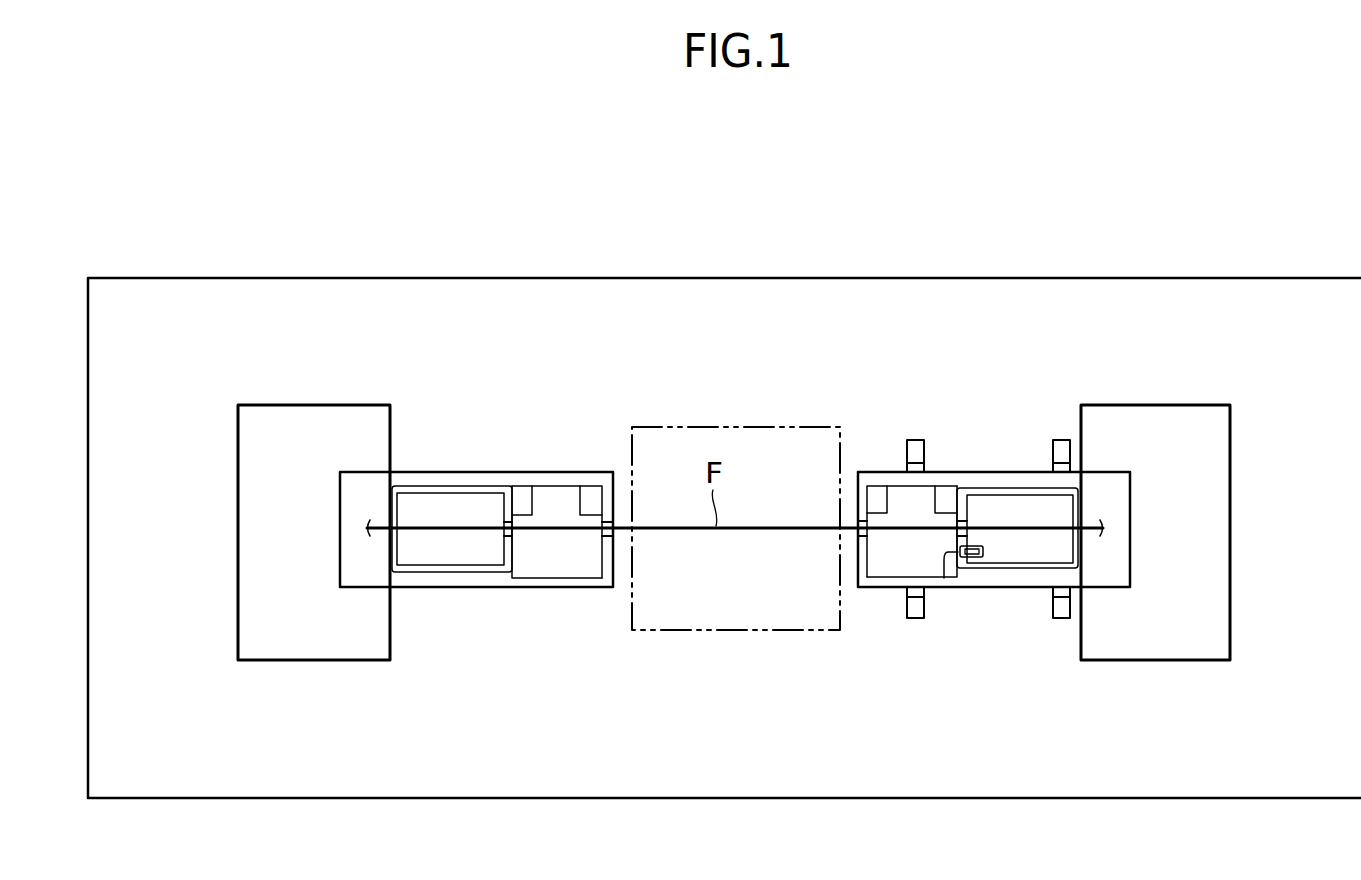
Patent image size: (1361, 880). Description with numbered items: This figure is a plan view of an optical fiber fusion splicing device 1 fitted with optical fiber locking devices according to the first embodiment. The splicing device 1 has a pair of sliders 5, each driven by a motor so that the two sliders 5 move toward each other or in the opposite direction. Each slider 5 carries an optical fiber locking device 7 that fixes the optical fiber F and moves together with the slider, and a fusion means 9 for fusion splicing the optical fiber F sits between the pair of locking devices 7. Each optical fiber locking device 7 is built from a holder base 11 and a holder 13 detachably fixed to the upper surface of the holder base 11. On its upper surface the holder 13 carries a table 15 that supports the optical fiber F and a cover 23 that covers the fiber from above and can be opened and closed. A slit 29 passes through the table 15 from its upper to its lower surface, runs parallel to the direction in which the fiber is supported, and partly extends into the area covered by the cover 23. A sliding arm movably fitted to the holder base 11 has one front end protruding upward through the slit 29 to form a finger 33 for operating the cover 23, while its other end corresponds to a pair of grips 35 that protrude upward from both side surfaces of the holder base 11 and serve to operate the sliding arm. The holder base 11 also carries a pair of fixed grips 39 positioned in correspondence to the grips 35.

The optical fiber fusion splicing device 1 is at (758, 240).
The slider 5 is at (352, 405).
The optical fiber locking device 7 is at (735, 504).
The fusion means 9 is at (753, 425).
The holder base 11 is at (500, 590).
The holder 13 is at (444, 486).
The table 15 is at (444, 547).
The cover 23 is at (595, 570).
The slit 29 is at (944, 578).
The finger 33 is at (978, 558).
The grip 35 is at (1062, 440).
The fixed grip 39 is at (915, 440).